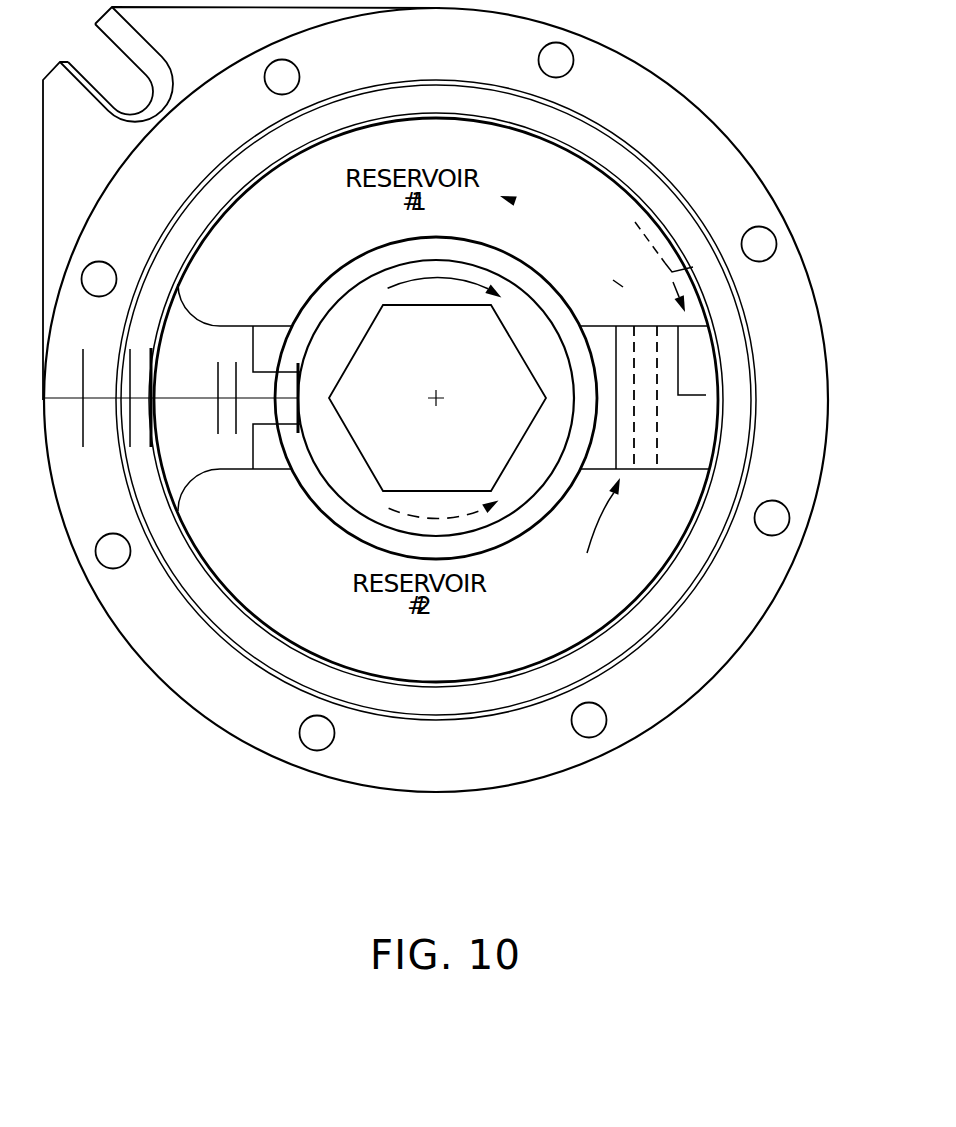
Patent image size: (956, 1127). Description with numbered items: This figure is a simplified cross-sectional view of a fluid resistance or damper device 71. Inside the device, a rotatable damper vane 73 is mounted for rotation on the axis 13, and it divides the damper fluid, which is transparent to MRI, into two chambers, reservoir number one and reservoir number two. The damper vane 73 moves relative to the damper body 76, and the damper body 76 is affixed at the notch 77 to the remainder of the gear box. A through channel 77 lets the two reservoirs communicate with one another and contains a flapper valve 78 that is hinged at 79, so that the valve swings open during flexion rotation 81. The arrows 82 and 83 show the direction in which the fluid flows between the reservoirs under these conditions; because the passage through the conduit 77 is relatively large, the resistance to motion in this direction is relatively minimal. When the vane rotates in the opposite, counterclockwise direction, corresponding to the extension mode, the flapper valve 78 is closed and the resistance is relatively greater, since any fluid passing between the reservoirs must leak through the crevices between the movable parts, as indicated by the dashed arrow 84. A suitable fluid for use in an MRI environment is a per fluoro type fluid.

The axis 13 is at (430, 393).
The fluid resistance or damper device 71 is at (747, 682).
The damper vane 73 is at (508, 543).
The damper body 76 is at (153, 470).
The notch / through channel 77 is at (135, 100).
The flapper valve 78 is at (623, 287).
The hinge 79 is at (623, 287).
The flexion rotation 81 is at (508, 299).
The arrow 82 is at (607, 530).
The arrow 83 is at (515, 201).
The dashed arrow 84 is at (693, 265).